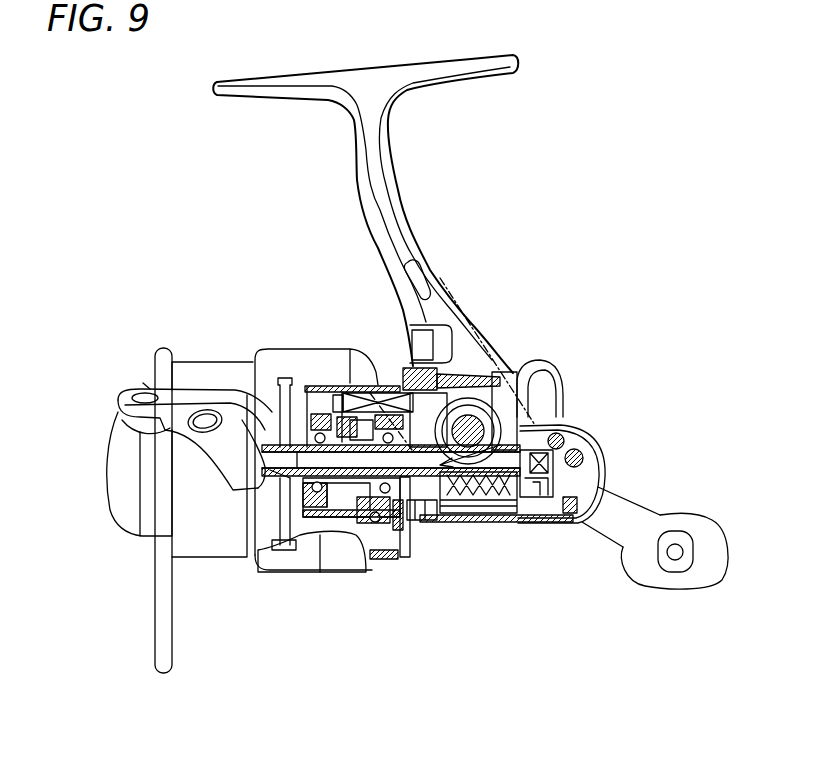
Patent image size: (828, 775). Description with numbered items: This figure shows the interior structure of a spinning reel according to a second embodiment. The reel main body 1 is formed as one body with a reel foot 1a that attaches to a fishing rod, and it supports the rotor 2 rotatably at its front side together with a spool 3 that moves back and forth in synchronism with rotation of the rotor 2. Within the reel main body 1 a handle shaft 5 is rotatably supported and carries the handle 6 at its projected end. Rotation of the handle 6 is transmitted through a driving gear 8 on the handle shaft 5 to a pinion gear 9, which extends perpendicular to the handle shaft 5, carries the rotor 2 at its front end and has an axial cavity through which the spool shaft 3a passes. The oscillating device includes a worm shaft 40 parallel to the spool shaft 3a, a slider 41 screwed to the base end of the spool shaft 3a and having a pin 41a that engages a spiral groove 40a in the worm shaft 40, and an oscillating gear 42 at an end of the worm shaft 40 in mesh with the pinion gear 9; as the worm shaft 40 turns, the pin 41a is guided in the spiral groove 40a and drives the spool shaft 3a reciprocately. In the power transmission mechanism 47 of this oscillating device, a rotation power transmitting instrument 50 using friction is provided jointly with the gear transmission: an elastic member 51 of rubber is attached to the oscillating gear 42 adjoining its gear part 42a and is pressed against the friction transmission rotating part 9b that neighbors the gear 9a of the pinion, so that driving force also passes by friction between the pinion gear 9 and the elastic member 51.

The reel main body 1 is at (500, 352).
The reel foot 1a is at (401, 215).
The rotor 2 is at (393, 367).
The spool 3 is at (297, 353).
The spool shaft 3a is at (247, 533).
The handle shaft 5 is at (505, 425).
The handle 6 is at (633, 512).
The driving gear 8 is at (465, 375).
The pinion gear 9 is at (320, 557).
The gear 9a is at (387, 552).
The friction transmission rotating part 9b is at (523, 400).
The worm shaft 40 is at (531, 515).
The spiral groove 40a is at (483, 497).
The slider 41 is at (565, 448).
The pin 41a is at (578, 480).
The oscillating gear 42 is at (427, 527).
The gear part 42a is at (407, 560).
The power transmission mechanism 47 is at (385, 394).
The rotation power transmitting instrument 50 is at (547, 437).
The elastic member 51 is at (440, 520).